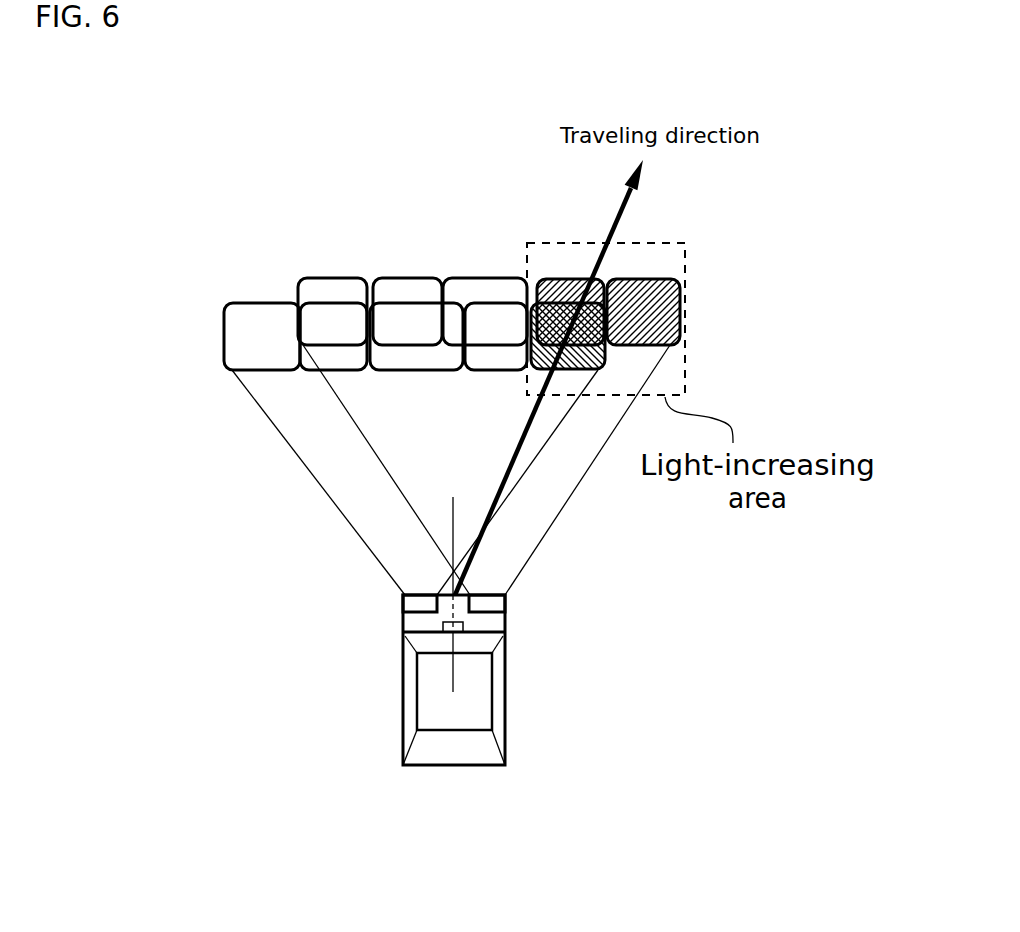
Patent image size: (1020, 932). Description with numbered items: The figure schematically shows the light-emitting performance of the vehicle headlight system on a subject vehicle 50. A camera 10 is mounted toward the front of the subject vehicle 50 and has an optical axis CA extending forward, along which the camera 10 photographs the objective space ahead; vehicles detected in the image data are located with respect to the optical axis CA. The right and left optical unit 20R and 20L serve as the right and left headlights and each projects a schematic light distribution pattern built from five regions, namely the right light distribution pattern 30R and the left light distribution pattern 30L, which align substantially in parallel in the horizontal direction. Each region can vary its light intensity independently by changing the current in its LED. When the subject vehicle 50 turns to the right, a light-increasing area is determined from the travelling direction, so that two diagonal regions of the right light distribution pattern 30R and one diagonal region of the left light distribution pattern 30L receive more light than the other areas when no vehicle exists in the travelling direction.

The camera 10 is at (445, 628).
The left optical unit 20L is at (412, 603).
The right optical unit 20R is at (505, 600).
The left light distribution pattern 30L is at (205, 338).
The right light distribution pattern 30R is at (696, 318).
The subject vehicle 50 is at (477, 705).
The optical axis CA is at (456, 577).